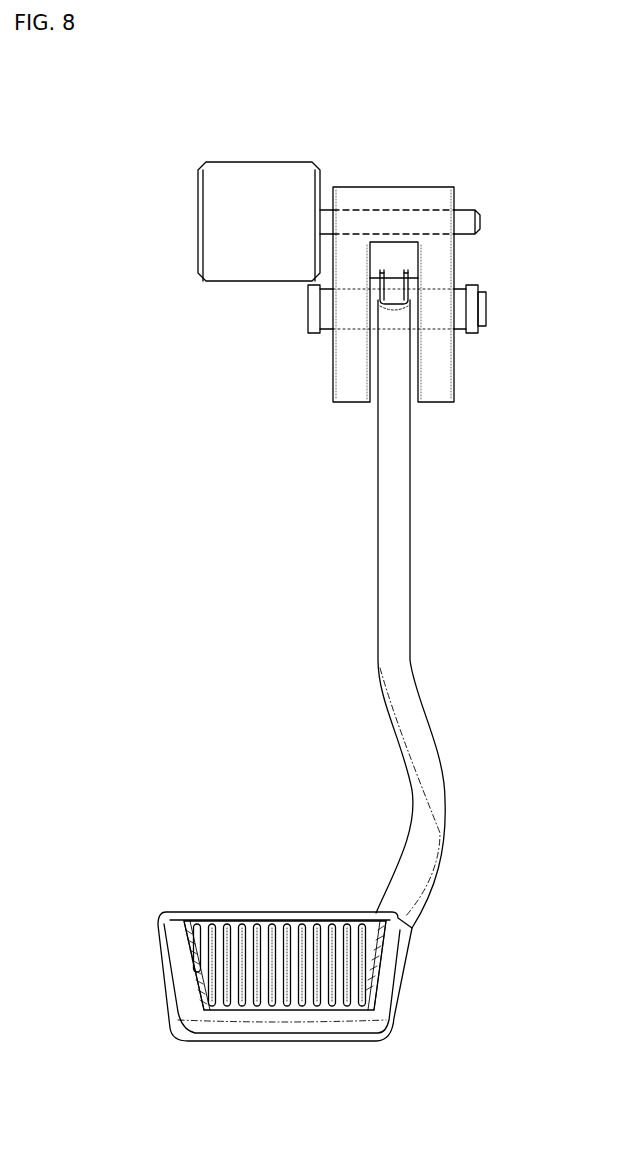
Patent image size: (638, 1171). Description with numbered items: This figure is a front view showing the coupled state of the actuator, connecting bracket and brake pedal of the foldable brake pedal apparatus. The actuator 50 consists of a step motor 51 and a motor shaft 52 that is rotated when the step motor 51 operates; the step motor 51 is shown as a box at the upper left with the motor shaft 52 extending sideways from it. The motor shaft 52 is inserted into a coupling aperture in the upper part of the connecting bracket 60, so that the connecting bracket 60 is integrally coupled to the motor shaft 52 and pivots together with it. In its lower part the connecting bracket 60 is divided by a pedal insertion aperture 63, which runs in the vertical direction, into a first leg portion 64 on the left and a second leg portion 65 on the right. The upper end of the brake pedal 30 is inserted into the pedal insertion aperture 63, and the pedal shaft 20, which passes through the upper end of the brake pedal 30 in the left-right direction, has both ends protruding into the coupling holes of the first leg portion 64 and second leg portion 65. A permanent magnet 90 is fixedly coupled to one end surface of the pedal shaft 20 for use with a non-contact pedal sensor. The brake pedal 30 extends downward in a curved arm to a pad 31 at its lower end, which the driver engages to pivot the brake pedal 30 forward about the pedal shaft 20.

The pedal shaft 20 is at (310, 316).
The brake pedal 30 is at (395, 612).
The pad 31 is at (285, 1035).
The actuator 50 is at (233, 176).
The step motor 51 is at (218, 225).
The motor shaft 52 is at (481, 222).
The connecting bracket 60 is at (396, 262).
The pedal insertion aperture 63 is at (370, 372).
The first leg portion 64 is at (350, 386).
The second leg portion 65 is at (442, 374).
The permanent magnet 90 is at (487, 306).